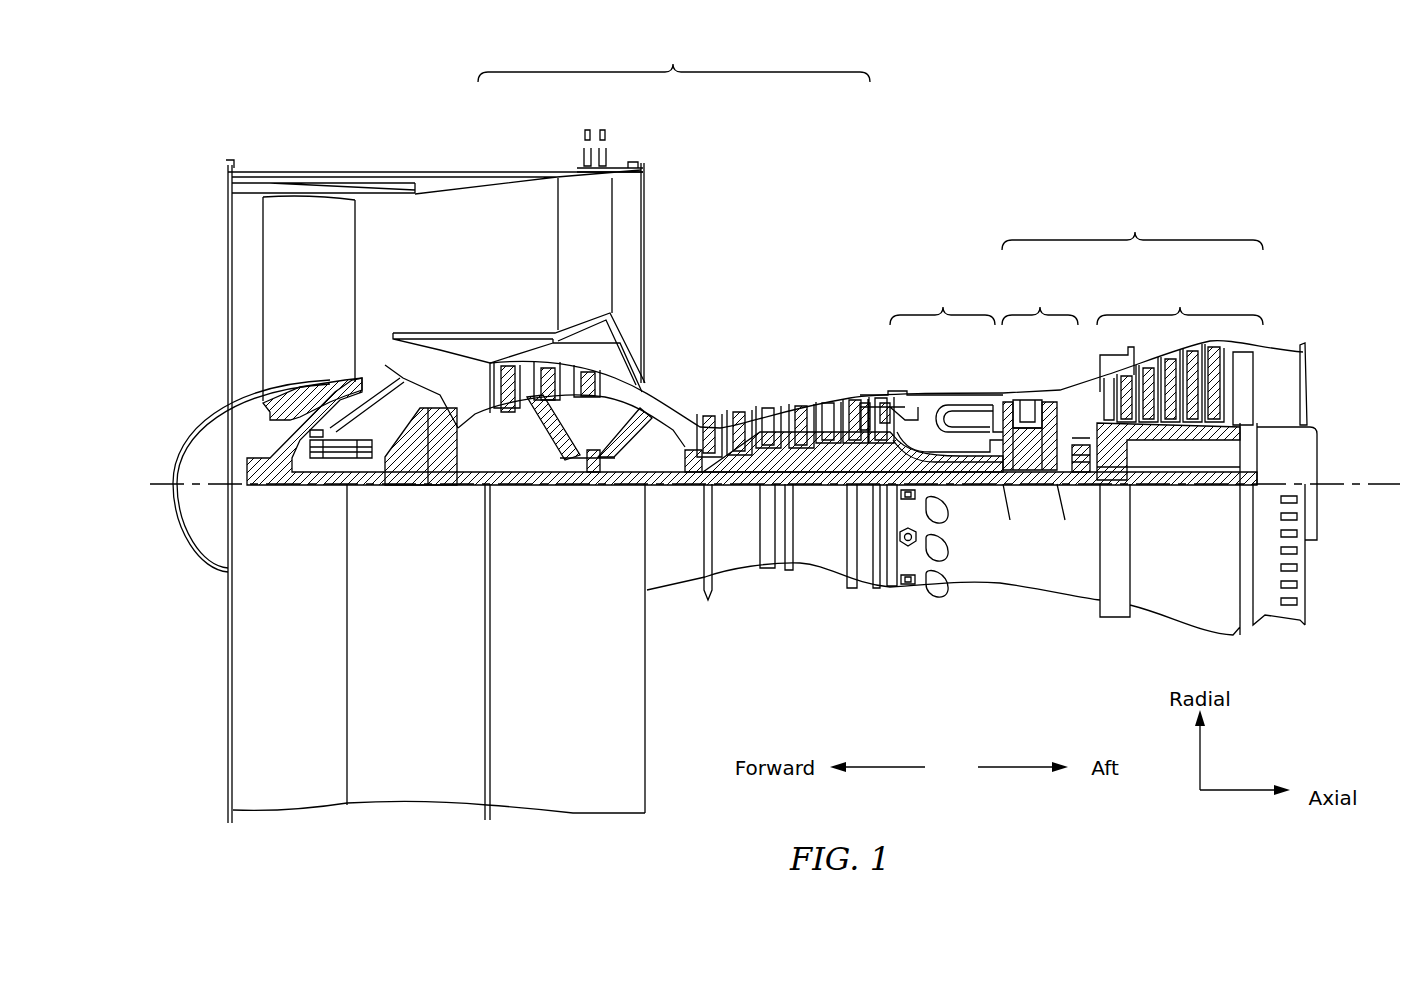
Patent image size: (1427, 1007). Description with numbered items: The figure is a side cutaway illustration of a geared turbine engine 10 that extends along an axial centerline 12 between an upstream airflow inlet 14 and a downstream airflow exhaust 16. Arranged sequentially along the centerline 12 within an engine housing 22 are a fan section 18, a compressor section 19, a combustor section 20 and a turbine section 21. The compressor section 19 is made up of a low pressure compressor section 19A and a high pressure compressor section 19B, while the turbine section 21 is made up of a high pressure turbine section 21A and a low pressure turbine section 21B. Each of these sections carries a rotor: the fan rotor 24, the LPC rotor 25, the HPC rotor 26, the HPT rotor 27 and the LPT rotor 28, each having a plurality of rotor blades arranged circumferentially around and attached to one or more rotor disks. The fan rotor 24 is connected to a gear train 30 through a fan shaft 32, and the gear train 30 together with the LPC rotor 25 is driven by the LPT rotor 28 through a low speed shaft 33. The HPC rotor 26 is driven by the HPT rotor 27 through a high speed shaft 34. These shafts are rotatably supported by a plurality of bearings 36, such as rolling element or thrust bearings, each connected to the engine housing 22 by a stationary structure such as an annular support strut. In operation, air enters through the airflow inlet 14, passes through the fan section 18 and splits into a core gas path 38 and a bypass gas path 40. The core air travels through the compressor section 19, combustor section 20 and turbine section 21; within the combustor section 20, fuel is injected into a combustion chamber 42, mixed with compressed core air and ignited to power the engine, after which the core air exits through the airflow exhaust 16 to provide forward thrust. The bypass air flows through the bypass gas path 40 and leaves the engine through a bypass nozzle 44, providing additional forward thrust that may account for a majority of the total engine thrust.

The geared turbine engine 10 is at (196, 153).
The axial centerline 12 is at (1366, 502).
The upstream airflow inlet 14 is at (228, 240).
The downstream airflow exhaust 16 is at (1305, 382).
The fan section 18 is at (405, 140).
The compressor section 19 is at (674, 57).
The low pressure compressor section 19A is at (645, 132).
The high pressure compressor section 19B is at (672, 325).
The combustor section 20 is at (942, 299).
The turbine section 21 is at (1132, 224).
The high pressure turbine section 21A is at (1040, 350).
The low pressure turbine section 21B is at (1153, 349).
The engine housing 22 is at (662, 598).
The fan rotor 24 is at (248, 410).
The LPC rotor 25 is at (547, 440).
The HPC rotor 26 is at (825, 450).
The HPT rotor 27 is at (1028, 475).
The LPT rotor 28 is at (1180, 437).
The gear train 30 is at (437, 485).
The fan shaft 32 is at (297, 498).
The low speed shaft 33 is at (866, 495).
The high speed shaft 34 is at (962, 462).
The bearings 36 is at (333, 487).
The core gas path 38 is at (663, 415).
The bypass gas path 40 is at (462, 259).
The combustion chamber 42 is at (958, 410).
The bypass nozzle 44 is at (643, 223).